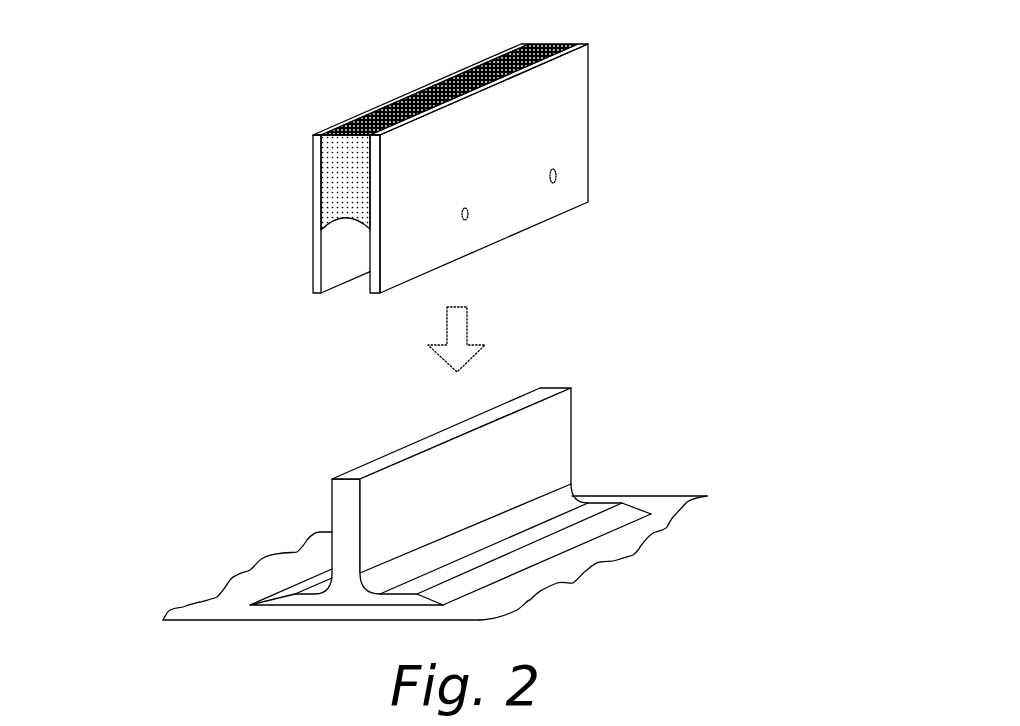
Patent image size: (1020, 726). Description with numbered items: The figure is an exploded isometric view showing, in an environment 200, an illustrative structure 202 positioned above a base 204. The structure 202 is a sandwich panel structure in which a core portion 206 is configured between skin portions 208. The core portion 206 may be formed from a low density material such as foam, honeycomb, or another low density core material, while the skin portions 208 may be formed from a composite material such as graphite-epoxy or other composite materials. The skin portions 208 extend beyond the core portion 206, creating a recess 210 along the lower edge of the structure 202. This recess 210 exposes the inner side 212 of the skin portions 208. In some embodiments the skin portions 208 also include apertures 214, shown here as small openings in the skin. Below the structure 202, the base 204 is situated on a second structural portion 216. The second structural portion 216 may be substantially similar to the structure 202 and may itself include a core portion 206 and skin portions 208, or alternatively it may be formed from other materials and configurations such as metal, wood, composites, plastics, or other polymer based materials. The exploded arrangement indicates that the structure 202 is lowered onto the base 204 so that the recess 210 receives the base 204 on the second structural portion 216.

The environment 200 is at (160, 66).
The structure 202 is at (611, 106).
The base 204 is at (599, 411).
The core portion 206 is at (554, 44).
The skin portions 208 is at (313, 170).
The recess 210 is at (333, 321).
The inner side 212 is at (355, 277).
The apertures 214 is at (554, 183).
The second structural portion 216 is at (690, 496).